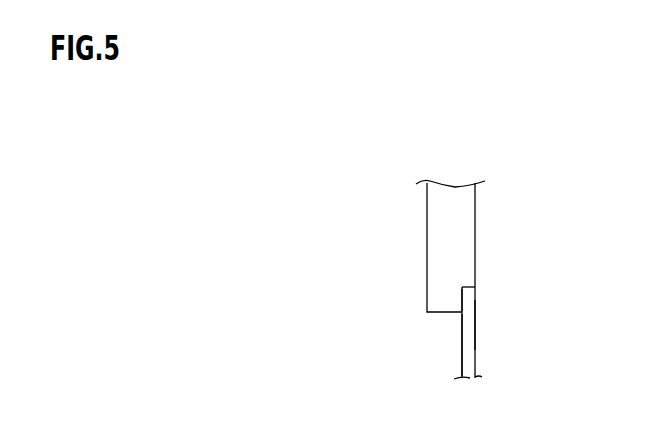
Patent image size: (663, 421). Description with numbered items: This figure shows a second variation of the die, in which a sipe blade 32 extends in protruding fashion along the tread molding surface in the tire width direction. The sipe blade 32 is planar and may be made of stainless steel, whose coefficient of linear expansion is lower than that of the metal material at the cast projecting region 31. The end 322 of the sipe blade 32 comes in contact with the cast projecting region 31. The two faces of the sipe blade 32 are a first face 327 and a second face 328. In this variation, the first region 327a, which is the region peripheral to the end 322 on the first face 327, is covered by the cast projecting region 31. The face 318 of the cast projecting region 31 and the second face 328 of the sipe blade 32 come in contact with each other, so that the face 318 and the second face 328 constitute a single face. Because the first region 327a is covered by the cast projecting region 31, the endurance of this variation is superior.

The cast projecting region 31 is at (466, 207).
The face of cast projecting region 318 is at (476, 245).
The sipe blade 32 is at (476, 363).
The end of sipe blade 322 is at (476, 291).
The second face of sipe blade 328 is at (476, 326).
The first face of sipe blade 327 is at (461, 353).
The first region 327a is at (461, 297).